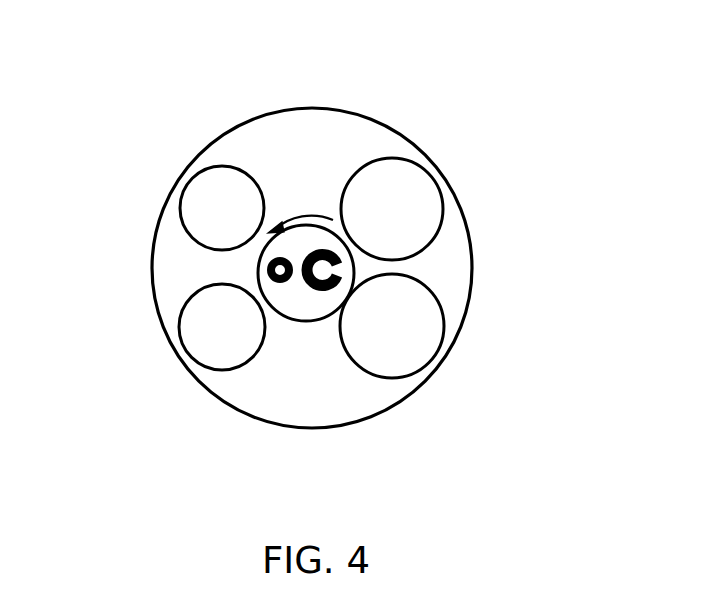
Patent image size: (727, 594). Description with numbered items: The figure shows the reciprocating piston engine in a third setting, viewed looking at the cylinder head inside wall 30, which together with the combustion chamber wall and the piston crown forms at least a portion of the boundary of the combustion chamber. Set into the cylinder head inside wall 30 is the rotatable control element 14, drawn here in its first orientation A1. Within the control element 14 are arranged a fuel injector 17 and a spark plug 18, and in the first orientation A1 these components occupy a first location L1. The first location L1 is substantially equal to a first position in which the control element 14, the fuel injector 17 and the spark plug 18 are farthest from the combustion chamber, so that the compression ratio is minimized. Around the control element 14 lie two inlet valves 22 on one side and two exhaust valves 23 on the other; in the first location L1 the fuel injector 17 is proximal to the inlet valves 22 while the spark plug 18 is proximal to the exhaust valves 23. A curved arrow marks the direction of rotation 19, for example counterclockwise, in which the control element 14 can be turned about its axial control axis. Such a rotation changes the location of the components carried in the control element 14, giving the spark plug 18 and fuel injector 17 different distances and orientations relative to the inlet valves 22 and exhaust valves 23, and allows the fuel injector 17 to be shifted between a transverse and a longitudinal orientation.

The control element 14 is at (266, 270).
The fuel injector 17 is at (277, 283).
The spark plug 18 is at (325, 292).
The direction of rotation 19 is at (298, 210).
The inlet valves 22 is at (180, 205).
The exhaust valves 23 is at (443, 205).
The cylinder head inside wall 30 is at (472, 258).
The first location L1 is at (155, 141).
The first orientation A1 is at (318, 180).